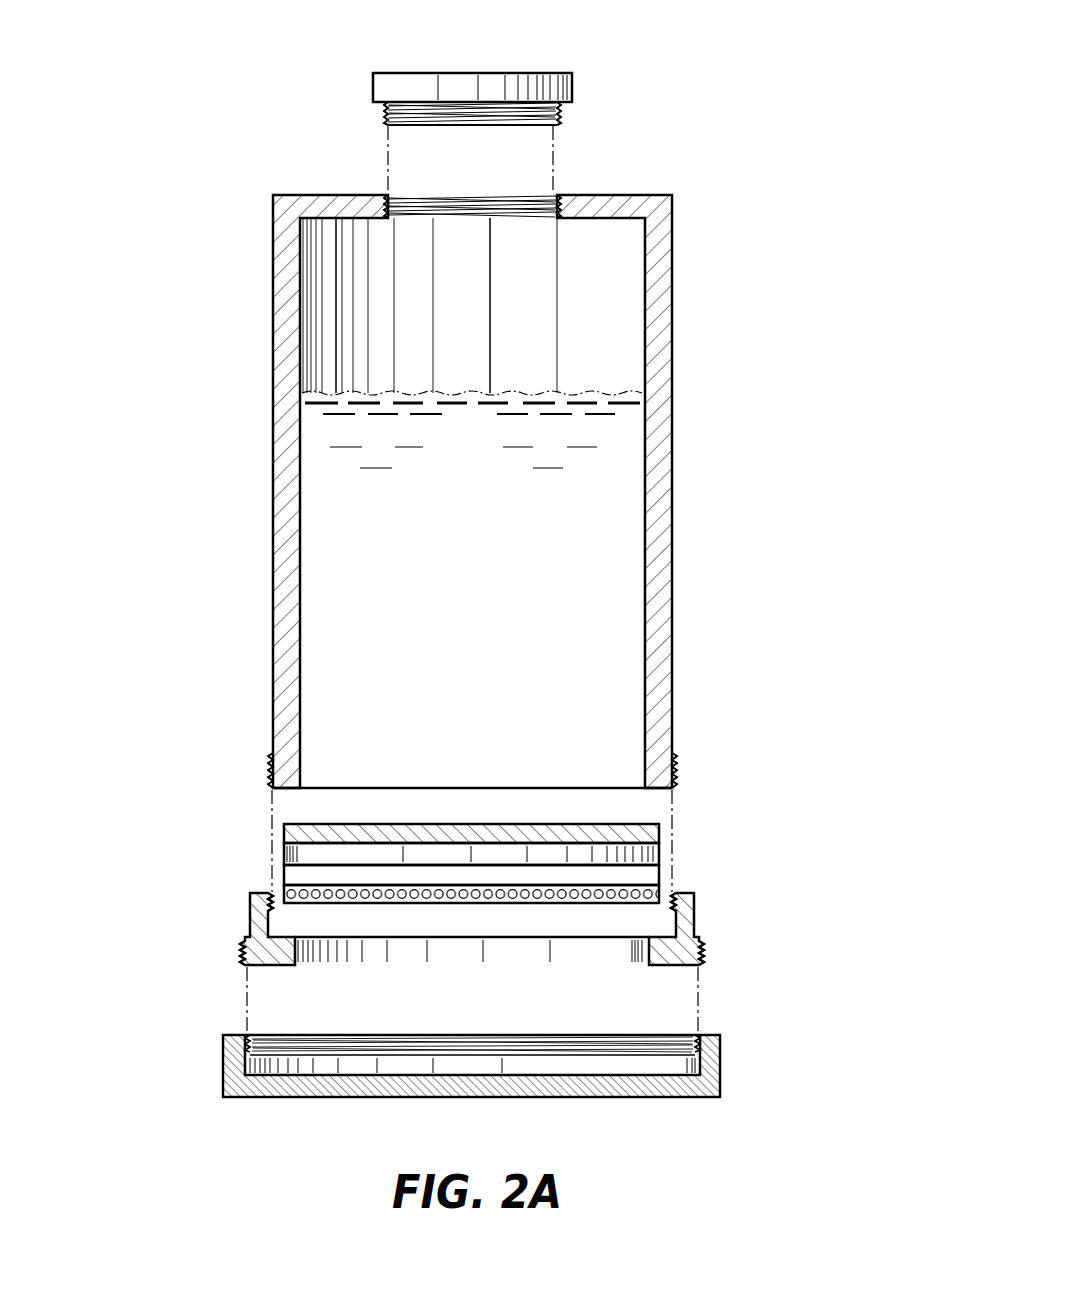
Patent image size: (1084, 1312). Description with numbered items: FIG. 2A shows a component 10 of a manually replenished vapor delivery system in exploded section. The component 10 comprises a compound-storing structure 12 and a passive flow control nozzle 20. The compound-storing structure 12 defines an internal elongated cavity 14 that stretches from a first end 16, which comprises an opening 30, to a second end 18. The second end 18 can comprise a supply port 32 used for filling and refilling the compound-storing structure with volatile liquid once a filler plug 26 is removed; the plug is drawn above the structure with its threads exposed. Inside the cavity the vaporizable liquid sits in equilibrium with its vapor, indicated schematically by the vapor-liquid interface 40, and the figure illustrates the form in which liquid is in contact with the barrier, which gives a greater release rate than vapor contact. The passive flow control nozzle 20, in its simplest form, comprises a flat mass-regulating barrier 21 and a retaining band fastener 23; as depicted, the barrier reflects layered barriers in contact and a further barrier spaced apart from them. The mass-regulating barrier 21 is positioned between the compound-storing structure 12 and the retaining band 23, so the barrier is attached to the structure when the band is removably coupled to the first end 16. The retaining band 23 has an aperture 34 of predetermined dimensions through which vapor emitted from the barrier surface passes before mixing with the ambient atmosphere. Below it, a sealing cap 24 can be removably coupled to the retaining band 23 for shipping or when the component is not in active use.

The component 10 is at (758, 135).
The compound-storing structure 12 is at (690, 513).
The internal elongated cavity 14 is at (340, 308).
The first end 16 is at (285, 800).
The second end 18 is at (327, 178).
The passive flow control nozzle 20 is at (733, 828).
The mass-regulating barrier 21 is at (660, 833).
The retaining band fastener 23 is at (256, 899).
The sealing cap 24 is at (690, 1086).
The filler plug 26 is at (511, 87).
The opening 30 is at (518, 752).
The supply port 32 is at (498, 247).
The aperture 34 is at (452, 985).
The vapor-liquid interface 40 is at (592, 393).